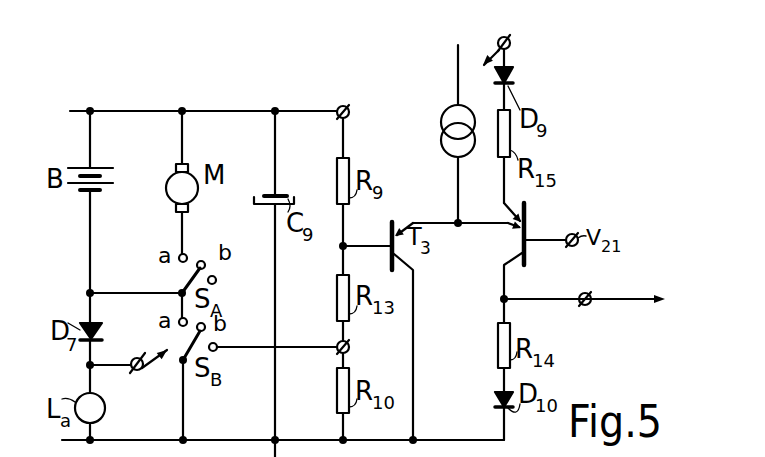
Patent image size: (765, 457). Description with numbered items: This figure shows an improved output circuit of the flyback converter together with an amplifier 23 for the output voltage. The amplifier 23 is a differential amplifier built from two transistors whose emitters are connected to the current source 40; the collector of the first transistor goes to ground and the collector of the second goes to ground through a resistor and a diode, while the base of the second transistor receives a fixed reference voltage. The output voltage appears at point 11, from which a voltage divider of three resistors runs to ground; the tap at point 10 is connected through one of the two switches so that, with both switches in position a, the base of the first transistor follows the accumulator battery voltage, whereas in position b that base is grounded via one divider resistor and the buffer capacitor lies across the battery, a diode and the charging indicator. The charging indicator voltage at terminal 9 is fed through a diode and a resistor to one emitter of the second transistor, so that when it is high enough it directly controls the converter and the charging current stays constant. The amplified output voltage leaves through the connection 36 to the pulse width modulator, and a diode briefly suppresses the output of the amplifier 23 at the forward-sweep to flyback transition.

The charging indicator terminal 9 is at (137, 358).
The voltage divider tap 10 is at (349, 347).
The output point 11 is at (344, 106).
The amplifier 23 is at (556, 204).
The connection 36 is at (650, 302).
The current source 40 is at (441, 138).